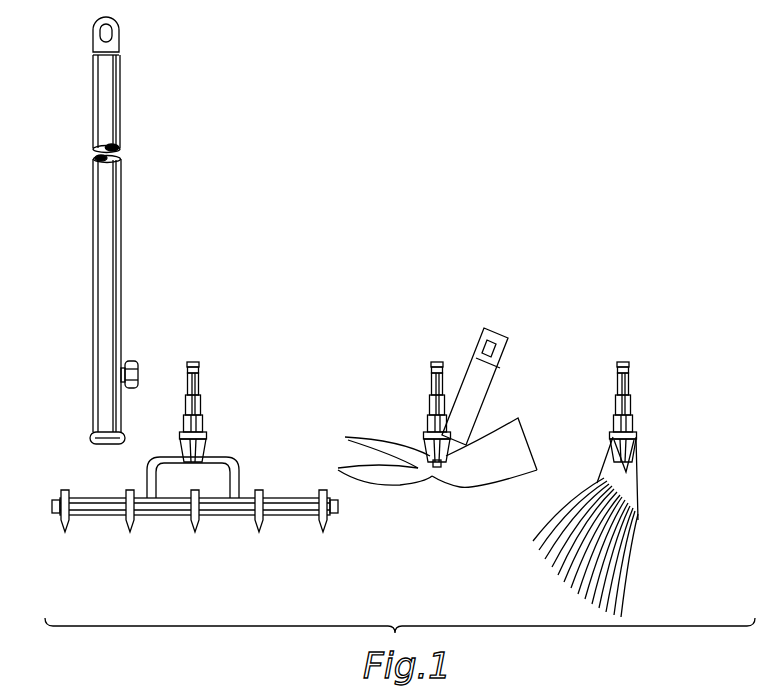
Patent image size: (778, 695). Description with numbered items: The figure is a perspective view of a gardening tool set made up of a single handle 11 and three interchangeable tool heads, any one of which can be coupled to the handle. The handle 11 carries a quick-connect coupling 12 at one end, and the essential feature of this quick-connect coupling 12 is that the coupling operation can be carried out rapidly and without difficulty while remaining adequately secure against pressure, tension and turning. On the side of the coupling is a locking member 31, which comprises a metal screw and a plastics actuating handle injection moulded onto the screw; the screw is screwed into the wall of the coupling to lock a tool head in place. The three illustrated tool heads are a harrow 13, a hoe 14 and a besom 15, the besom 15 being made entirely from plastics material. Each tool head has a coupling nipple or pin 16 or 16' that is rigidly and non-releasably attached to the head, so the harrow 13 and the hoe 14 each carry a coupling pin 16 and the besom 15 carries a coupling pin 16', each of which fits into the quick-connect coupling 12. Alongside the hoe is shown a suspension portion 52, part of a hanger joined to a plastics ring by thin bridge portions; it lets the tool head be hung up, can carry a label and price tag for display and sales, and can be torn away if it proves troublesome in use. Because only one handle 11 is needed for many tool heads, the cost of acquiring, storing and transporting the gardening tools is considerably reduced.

The handle 11 is at (135, 166).
The quick-connect coupling 12 is at (92, 374).
The locking member 31 is at (139, 366).
The harrow 13 is at (216, 505).
The coupling nipple or pin 16 is at (315, 410).
The hoe 14 is at (468, 466).
The suspension portion 52 is at (505, 352).
The besom 15 is at (632, 487).
The coupling nipple or pin 16' is at (659, 411).